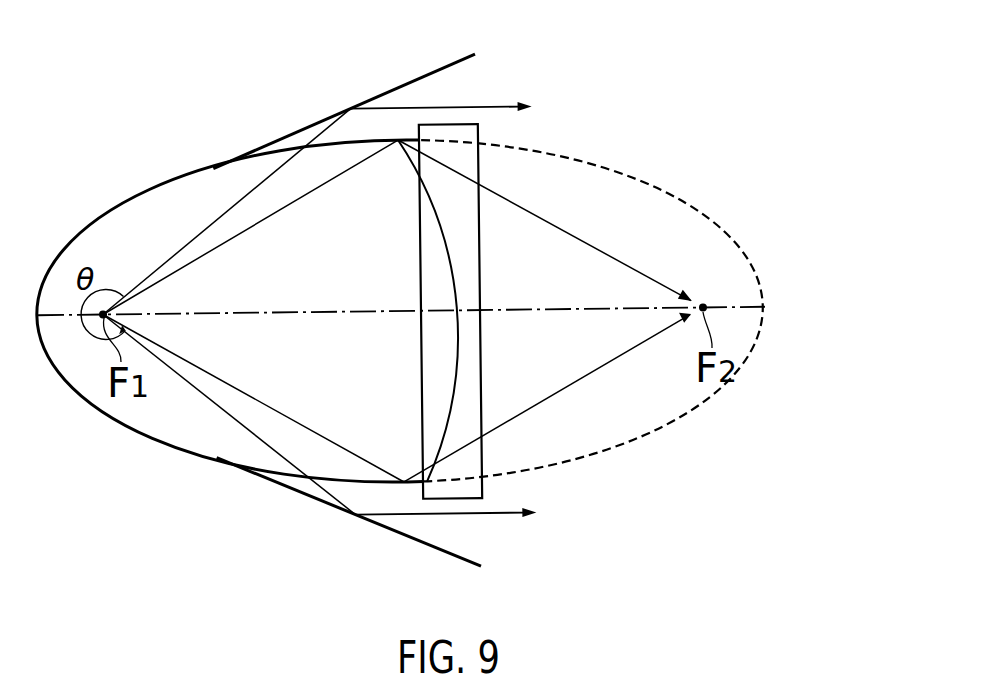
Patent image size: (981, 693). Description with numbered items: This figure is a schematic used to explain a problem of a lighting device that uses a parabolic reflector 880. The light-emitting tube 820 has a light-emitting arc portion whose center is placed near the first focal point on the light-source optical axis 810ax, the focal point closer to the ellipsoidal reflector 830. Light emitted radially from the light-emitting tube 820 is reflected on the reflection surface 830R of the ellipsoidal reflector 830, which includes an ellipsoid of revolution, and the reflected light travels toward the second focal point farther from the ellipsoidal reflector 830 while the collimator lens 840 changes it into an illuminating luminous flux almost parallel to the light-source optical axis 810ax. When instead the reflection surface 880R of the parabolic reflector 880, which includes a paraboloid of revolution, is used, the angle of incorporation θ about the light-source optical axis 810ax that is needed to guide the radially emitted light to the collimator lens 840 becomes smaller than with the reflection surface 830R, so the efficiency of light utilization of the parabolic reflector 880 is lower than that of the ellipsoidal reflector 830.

The light-source optical axis 810ax is at (750, 308).
The light-emitting tube 820 is at (97, 330).
The ellipsoidal reflector 830 is at (400, 353).
The reflection surface 830R is at (283, 481).
The collimator lens 840 is at (455, 125).
The parabolic reflector 880 is at (346, 332).
The reflection surface 880R is at (340, 513).